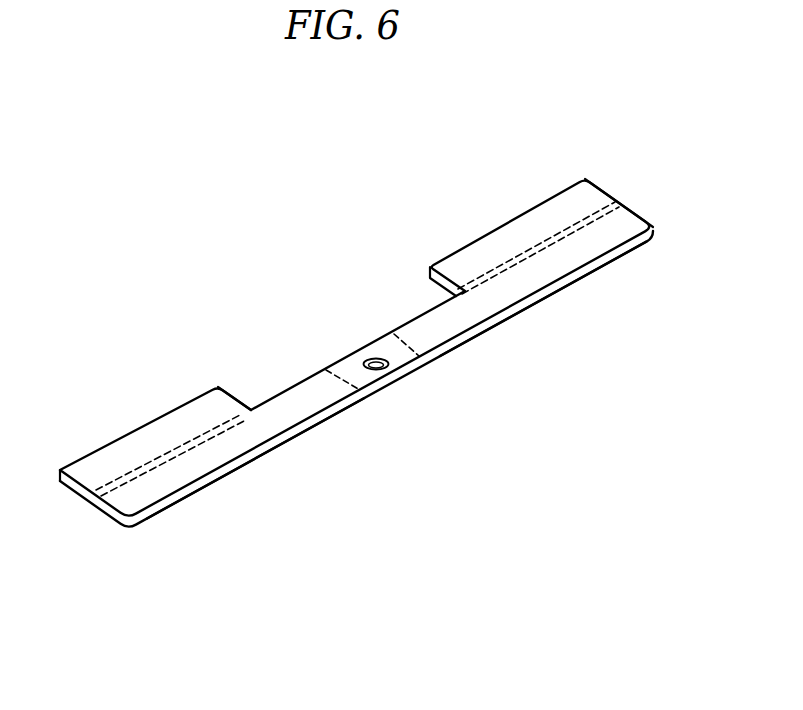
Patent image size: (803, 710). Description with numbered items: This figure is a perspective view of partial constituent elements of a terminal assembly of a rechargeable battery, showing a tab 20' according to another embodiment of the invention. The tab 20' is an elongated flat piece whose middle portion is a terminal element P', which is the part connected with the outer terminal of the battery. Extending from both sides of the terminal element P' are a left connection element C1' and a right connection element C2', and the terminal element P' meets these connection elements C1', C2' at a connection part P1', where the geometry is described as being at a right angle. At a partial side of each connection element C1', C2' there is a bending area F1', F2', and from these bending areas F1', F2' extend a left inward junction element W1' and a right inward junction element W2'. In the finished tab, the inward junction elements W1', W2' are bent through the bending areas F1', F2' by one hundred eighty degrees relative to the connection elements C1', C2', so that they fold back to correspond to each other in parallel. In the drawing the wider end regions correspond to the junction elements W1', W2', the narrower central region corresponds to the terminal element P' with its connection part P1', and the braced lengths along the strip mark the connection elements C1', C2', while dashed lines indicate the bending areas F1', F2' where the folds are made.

The tab 20' is at (356, 354).
The left inward junction element W1' is at (149, 439).
The right inward junction element W2' is at (524, 234).
The left connection element C1' is at (256, 465).
The right connection element C2' is at (552, 306).
The terminal element P' is at (401, 391).
The connection part P1' is at (357, 321).
The bending area F1' is at (238, 377).
The bending area F2' is at (640, 203).